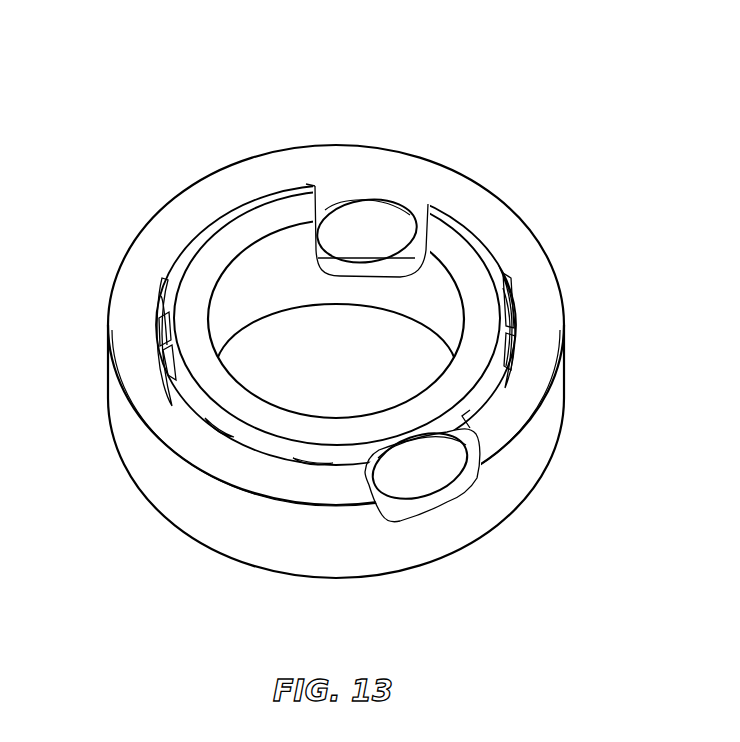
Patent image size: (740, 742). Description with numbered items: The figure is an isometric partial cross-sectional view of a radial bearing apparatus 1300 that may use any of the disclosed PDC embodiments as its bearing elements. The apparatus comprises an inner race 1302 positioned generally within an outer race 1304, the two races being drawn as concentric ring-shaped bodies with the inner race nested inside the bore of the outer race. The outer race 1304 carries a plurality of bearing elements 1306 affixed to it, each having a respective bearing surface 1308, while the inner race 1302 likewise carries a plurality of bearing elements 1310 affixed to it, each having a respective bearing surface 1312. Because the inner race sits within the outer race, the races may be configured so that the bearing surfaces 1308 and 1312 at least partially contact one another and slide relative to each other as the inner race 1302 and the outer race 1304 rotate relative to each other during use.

The radial bearing apparatus 1300 is at (507, 103).
The inner race 1302 is at (288, 222).
The outer race 1304 is at (125, 494).
The bearing elements 1306 is at (400, 458).
The bearing surfaces 1308 is at (436, 466).
The bearing elements 1310 is at (404, 208).
The bearing surfaces 1312 is at (372, 222).